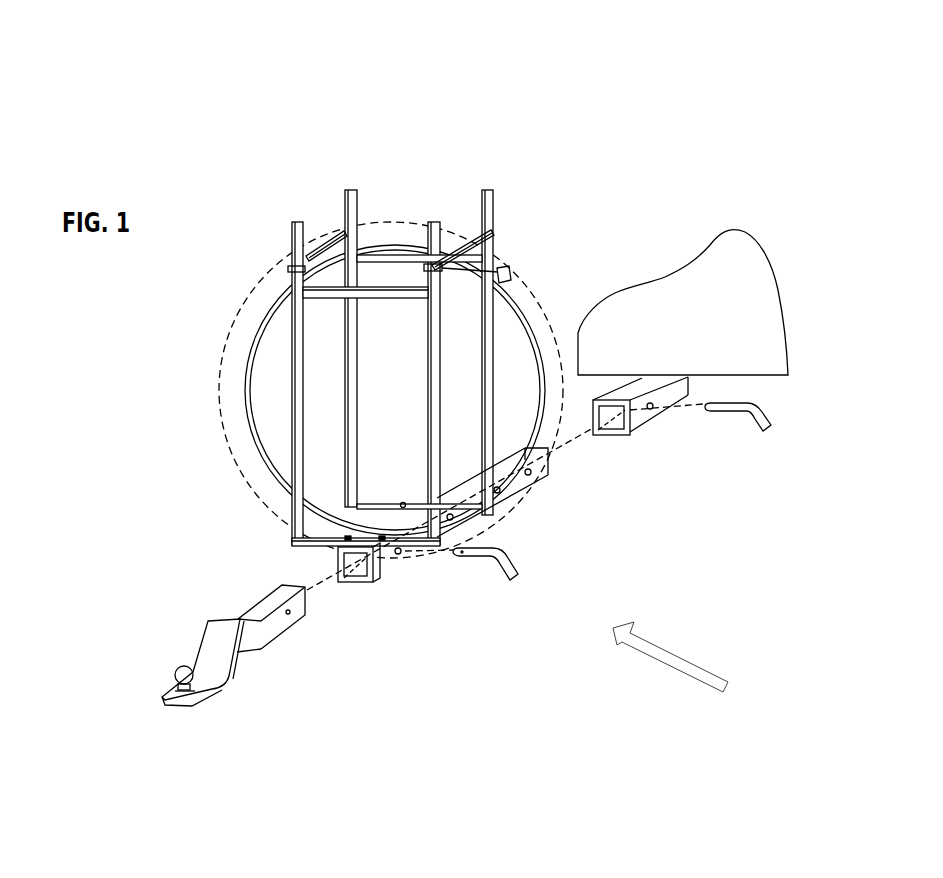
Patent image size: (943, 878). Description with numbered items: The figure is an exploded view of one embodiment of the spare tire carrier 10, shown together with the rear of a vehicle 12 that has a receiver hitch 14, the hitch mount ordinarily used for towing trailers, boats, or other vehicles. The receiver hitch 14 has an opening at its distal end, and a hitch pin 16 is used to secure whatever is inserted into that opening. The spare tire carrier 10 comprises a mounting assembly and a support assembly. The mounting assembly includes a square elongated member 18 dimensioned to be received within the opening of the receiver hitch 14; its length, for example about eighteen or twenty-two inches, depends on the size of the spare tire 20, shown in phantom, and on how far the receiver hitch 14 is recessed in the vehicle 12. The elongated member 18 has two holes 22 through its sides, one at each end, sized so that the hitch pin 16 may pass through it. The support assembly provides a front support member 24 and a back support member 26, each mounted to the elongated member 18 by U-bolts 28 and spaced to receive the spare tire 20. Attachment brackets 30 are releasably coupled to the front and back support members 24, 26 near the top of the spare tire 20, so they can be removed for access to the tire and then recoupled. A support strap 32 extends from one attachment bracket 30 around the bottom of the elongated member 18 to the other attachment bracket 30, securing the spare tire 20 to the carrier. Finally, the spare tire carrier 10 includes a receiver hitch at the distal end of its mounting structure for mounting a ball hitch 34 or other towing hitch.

The spare tire carrier 10 is at (685, 674).
The vehicle 12 is at (697, 262).
The receiver hitch 14 is at (620, 430).
The hitch pin 16 is at (727, 413).
The elongated member 18 is at (385, 560).
The spare tire 20 is at (248, 487).
The holes 22 is at (545, 470).
The front support member 24 is at (293, 338).
The back support member 26 is at (478, 200).
The U-bolts 28 is at (380, 585).
The attachment brackets 30 is at (322, 245).
The support strap 32 is at (253, 428).
The ball hitch 34 is at (262, 625).